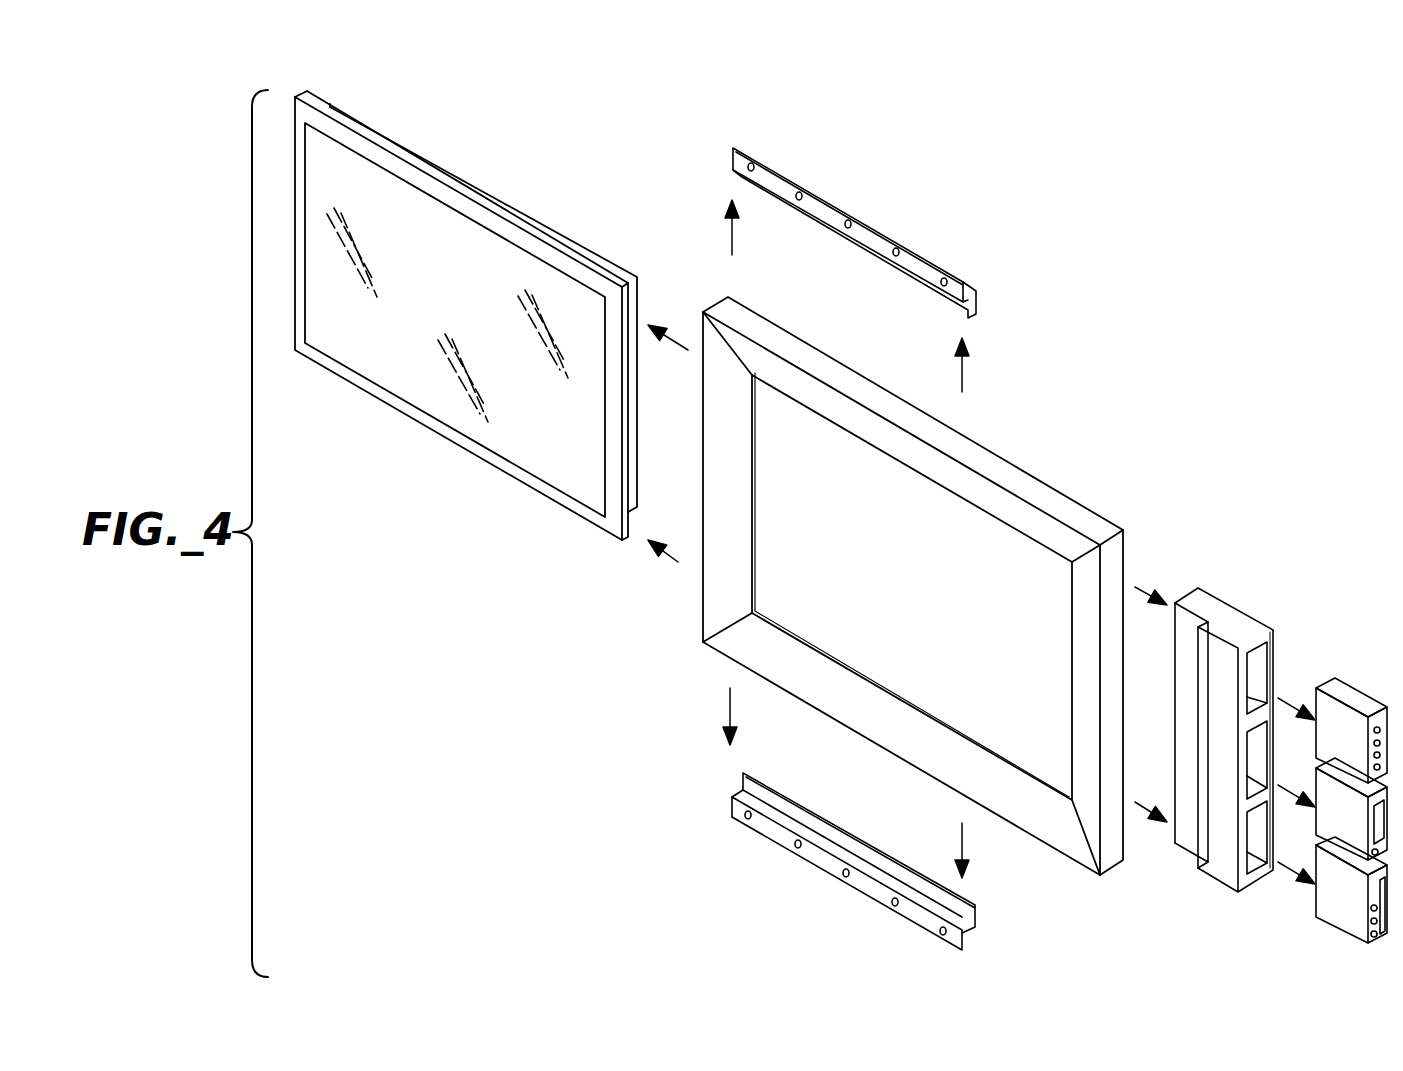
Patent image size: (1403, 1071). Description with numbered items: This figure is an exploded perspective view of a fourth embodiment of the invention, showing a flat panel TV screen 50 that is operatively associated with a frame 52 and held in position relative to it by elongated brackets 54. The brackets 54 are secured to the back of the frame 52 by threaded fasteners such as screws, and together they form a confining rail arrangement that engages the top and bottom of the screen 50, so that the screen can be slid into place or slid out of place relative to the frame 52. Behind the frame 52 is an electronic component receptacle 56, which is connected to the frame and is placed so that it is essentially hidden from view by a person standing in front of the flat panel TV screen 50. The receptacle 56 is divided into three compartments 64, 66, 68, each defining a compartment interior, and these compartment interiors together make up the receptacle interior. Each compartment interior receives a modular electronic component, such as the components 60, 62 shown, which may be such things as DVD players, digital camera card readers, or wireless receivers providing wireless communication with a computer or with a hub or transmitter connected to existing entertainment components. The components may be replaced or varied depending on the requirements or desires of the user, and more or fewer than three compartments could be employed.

The flat panel TV screen 50 is at (451, 190).
The frame 52 is at (977, 453).
The elongated brackets 54 is at (872, 255).
The electronic component receptacle 56 is at (1224, 741).
The modular electronic component 60 is at (1388, 812).
The modular electronic component 62 is at (1332, 922).
The compartment 64 is at (1258, 672).
The compartment 66 is at (1253, 757).
The compartment 68 is at (1265, 868).